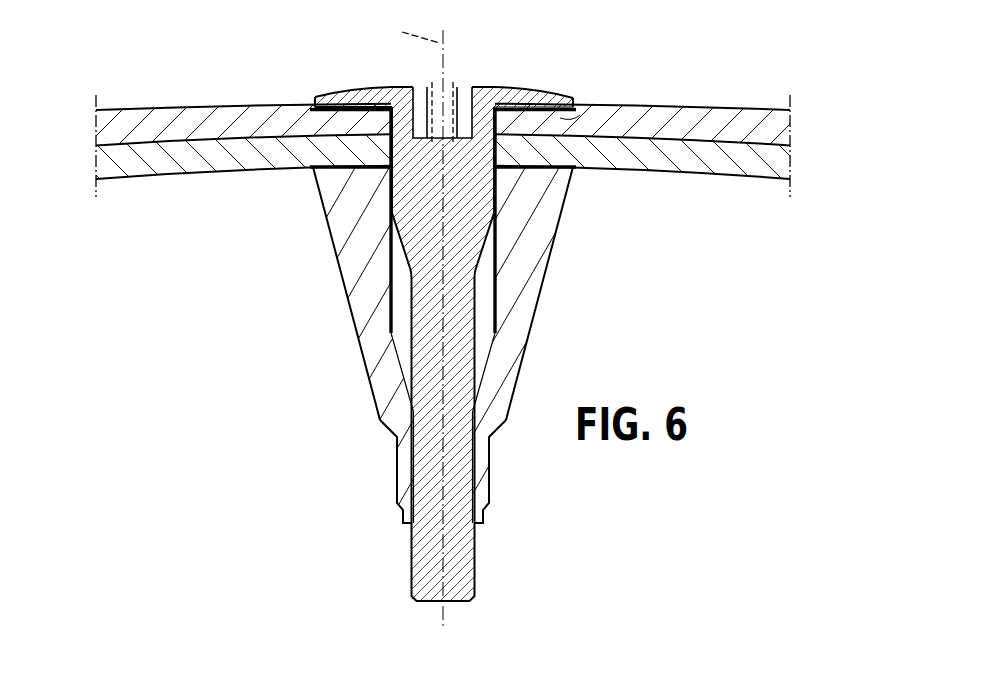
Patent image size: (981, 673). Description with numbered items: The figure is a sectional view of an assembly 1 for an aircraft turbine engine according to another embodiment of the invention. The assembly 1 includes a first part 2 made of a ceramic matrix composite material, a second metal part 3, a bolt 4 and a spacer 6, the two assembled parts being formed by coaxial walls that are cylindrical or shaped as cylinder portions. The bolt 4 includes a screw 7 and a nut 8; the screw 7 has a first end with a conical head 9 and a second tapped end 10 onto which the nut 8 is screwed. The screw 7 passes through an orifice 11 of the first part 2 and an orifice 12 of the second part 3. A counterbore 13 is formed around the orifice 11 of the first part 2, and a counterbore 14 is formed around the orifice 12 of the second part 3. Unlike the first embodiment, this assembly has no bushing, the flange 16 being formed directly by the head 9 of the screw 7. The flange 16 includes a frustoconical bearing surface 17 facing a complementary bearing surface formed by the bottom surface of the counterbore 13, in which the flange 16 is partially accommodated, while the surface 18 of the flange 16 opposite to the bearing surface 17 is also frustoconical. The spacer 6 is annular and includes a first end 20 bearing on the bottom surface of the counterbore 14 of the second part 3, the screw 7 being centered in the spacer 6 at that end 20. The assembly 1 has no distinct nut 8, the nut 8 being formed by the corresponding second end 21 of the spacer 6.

The assembly 1 is at (477, 314).
The first part 2 is at (773, 128).
The second part 3 is at (775, 160).
The bolt 4 is at (450, 323).
The spacer 6 is at (473, 348).
The screw 7 is at (396, 354).
The second tapped end 10 is at (427, 557).
The nut 8 is at (482, 470).
The second end 21 is at (477, 486).
The conical head 9 is at (458, 80).
The orifice 11 is at (385, 106).
The orifice 12 is at (388, 168).
The counterbore 13 is at (554, 114).
The counterbore 14 is at (556, 170).
The flange 16 is at (533, 97).
The frustoconical bearing surface 17 is at (510, 105).
The surface 18 is at (563, 100).
The first end 20 is at (530, 180).